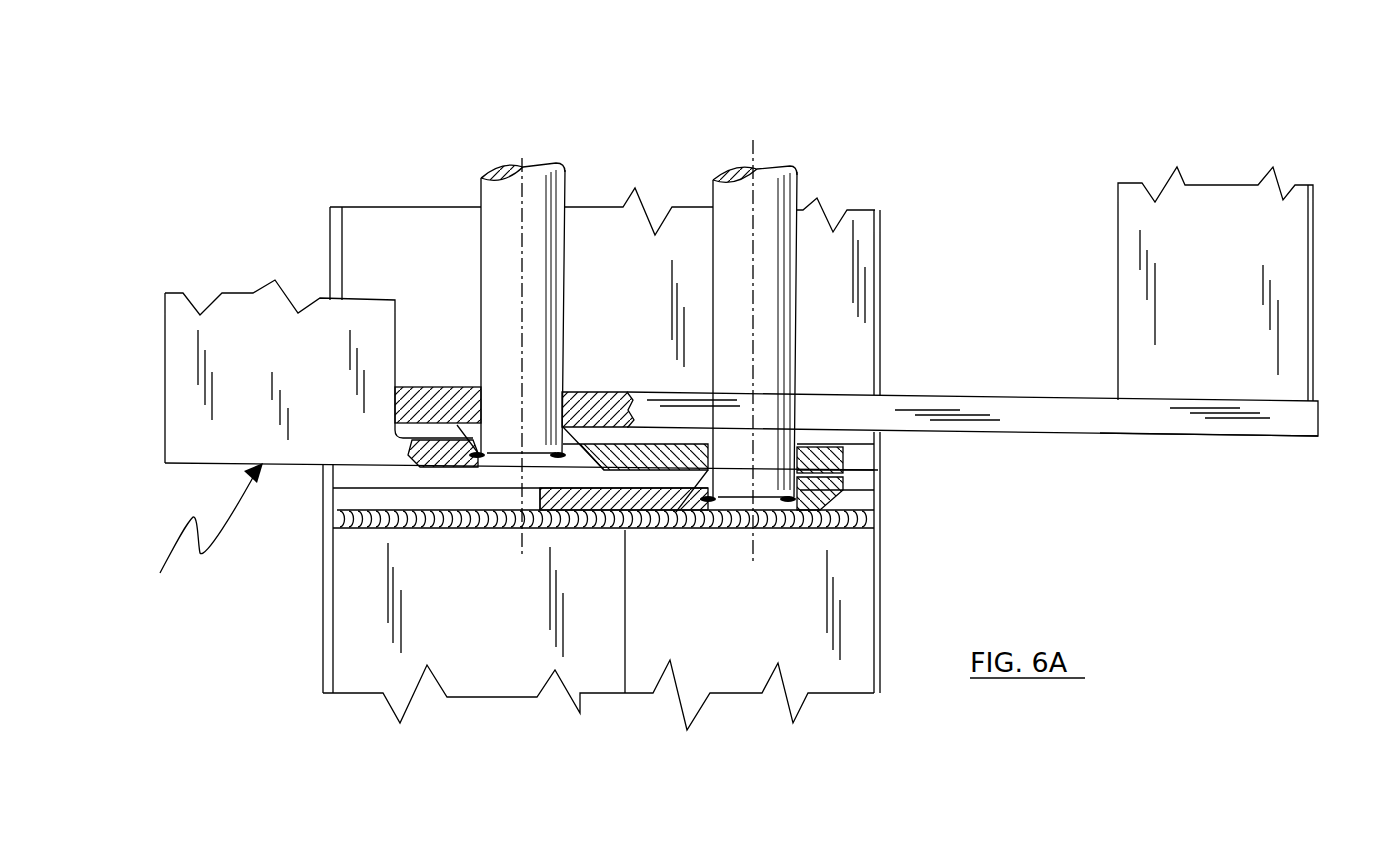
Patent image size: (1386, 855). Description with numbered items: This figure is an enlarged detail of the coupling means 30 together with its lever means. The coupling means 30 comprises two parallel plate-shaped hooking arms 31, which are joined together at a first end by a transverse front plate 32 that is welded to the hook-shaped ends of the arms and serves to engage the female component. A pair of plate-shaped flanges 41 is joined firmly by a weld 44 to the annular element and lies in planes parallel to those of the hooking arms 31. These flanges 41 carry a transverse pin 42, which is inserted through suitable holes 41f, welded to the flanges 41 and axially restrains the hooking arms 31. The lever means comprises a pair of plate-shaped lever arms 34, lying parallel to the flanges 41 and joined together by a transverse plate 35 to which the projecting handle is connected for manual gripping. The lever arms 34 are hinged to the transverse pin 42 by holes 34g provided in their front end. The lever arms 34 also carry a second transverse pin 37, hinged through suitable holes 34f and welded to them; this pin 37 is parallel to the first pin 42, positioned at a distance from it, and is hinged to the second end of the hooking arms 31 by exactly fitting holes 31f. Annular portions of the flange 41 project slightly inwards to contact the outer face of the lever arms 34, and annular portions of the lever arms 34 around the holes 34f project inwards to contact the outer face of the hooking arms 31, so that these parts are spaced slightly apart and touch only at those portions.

The coupling means 30 is at (1036, 447).
The hooking arm 31 is at (1195, 438).
The hole 31f is at (560, 407).
The transverse front plate 32 is at (1117, 320).
The lever arm 34 is at (680, 455).
The hole 34f is at (477, 438).
The hole 34g is at (790, 453).
The transverse plate 35 is at (243, 315).
The second transverse pin 37 is at (568, 177).
The flange 41 is at (600, 528).
The hole 41f is at (740, 490).
The transverse pin 42 is at (770, 195).
The weld 44 is at (360, 528).